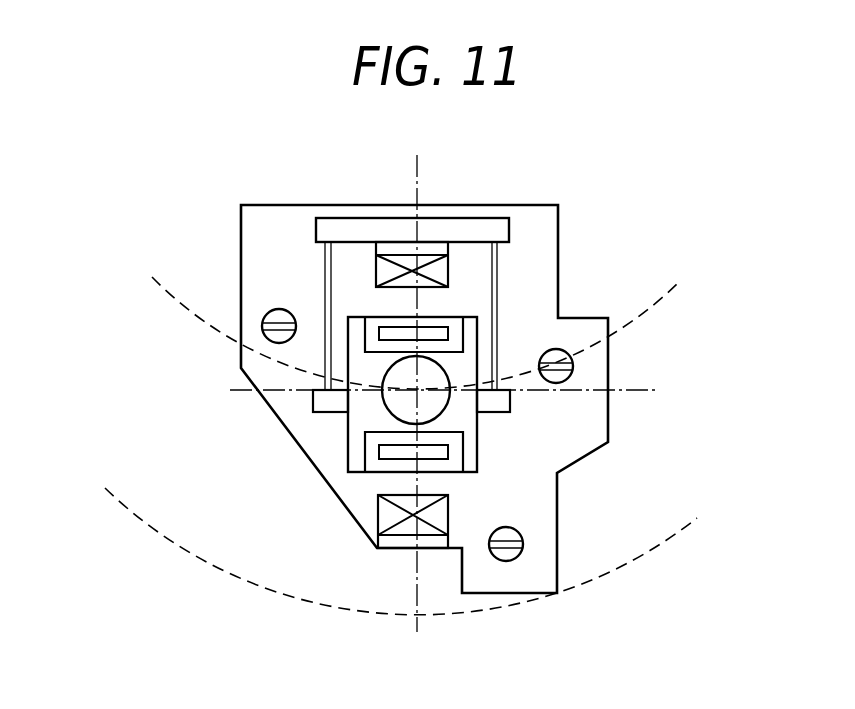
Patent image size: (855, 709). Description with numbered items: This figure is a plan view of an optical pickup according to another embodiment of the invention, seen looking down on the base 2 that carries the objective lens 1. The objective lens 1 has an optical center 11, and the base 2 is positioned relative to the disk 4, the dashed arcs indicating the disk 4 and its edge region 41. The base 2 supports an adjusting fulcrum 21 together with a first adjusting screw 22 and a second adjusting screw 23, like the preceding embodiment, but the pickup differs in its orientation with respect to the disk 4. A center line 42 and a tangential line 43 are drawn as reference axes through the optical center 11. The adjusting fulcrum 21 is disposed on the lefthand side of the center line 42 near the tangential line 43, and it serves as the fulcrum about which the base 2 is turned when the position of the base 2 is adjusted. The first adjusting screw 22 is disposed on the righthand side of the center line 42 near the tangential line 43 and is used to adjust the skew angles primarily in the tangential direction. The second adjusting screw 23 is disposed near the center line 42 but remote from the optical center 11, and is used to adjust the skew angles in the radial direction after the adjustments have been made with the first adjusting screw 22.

The objective lens 1 is at (416, 390).
The optical center 11 is at (385, 412).
The base 2 is at (485, 205).
The adjusting fulcrum 21 is at (264, 333).
The first adjusting screw 22 is at (558, 349).
The second adjusting screw 23 is at (506, 562).
The disk 4 is at (677, 540).
The drum rim 41 is at (668, 291).
The center line 42 is at (417, 176).
The tangential line 43 is at (622, 389).